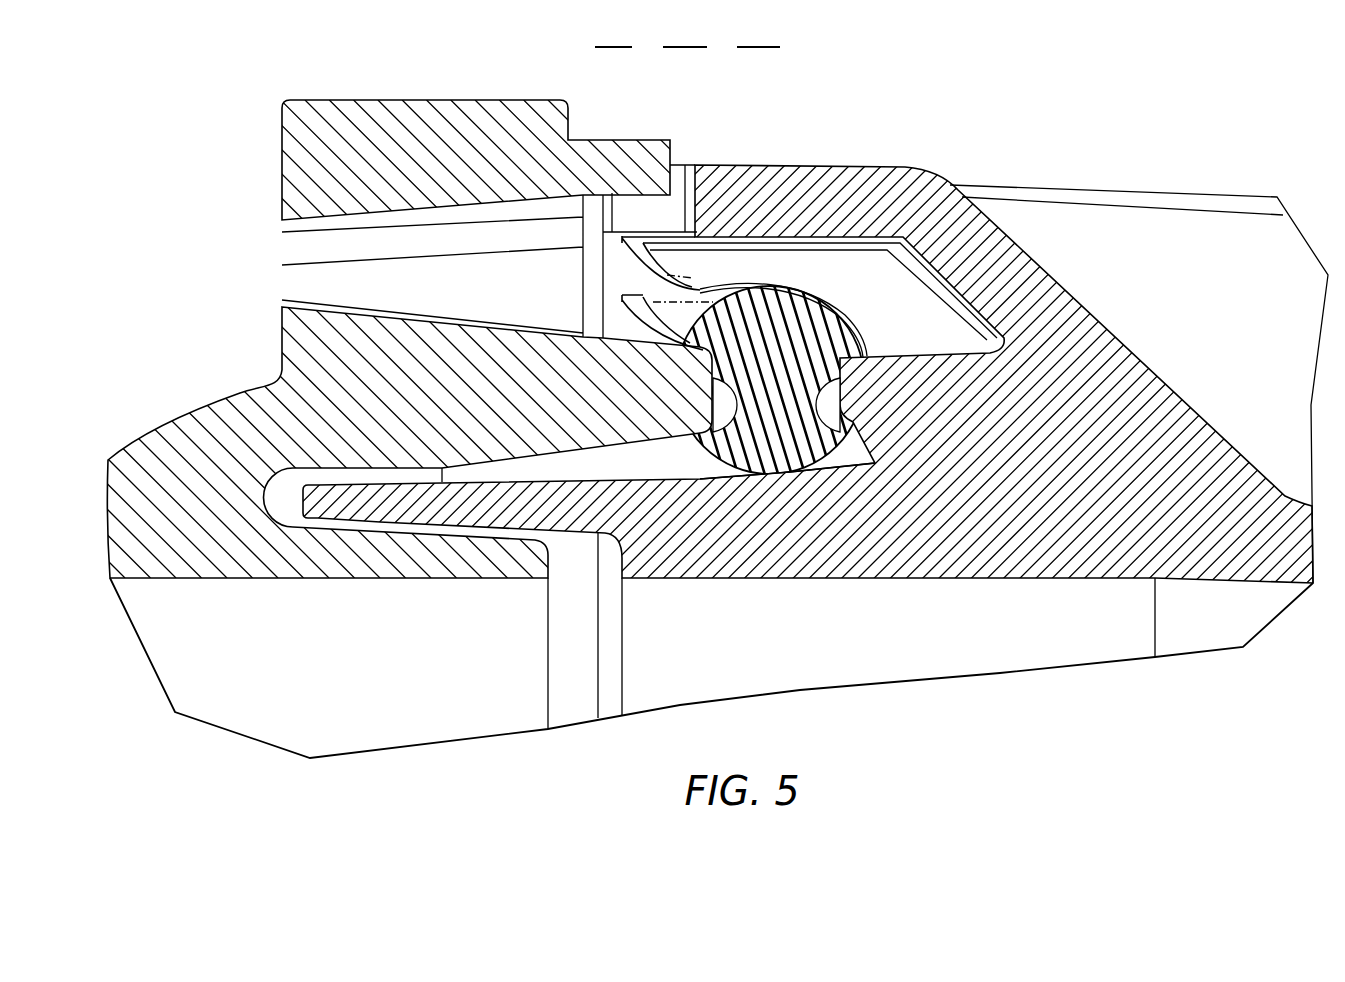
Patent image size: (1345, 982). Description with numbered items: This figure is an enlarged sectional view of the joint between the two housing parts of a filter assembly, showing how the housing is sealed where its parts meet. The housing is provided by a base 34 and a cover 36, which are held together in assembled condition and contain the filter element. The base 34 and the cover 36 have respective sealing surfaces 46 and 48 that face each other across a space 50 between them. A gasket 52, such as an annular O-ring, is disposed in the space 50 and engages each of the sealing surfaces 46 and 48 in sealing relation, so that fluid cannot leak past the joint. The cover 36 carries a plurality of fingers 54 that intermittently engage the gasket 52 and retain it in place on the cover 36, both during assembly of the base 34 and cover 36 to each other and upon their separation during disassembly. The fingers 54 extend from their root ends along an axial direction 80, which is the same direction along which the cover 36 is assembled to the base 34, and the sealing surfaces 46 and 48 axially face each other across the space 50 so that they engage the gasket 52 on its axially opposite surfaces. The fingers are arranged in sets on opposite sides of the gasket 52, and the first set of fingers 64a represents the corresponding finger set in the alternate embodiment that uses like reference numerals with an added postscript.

The axial direction 80 is at (688, 47).
The fingers 54 is at (663, 312).
The first set of fingers 64a is at (690, 300).
The space 50 is at (803, 328).
The sealing surface 46 is at (722, 420).
The sealing surface 48 is at (822, 412).
The gasket 52 is at (778, 455).
The cover 36 is at (995, 580).
The base 34 is at (328, 578).